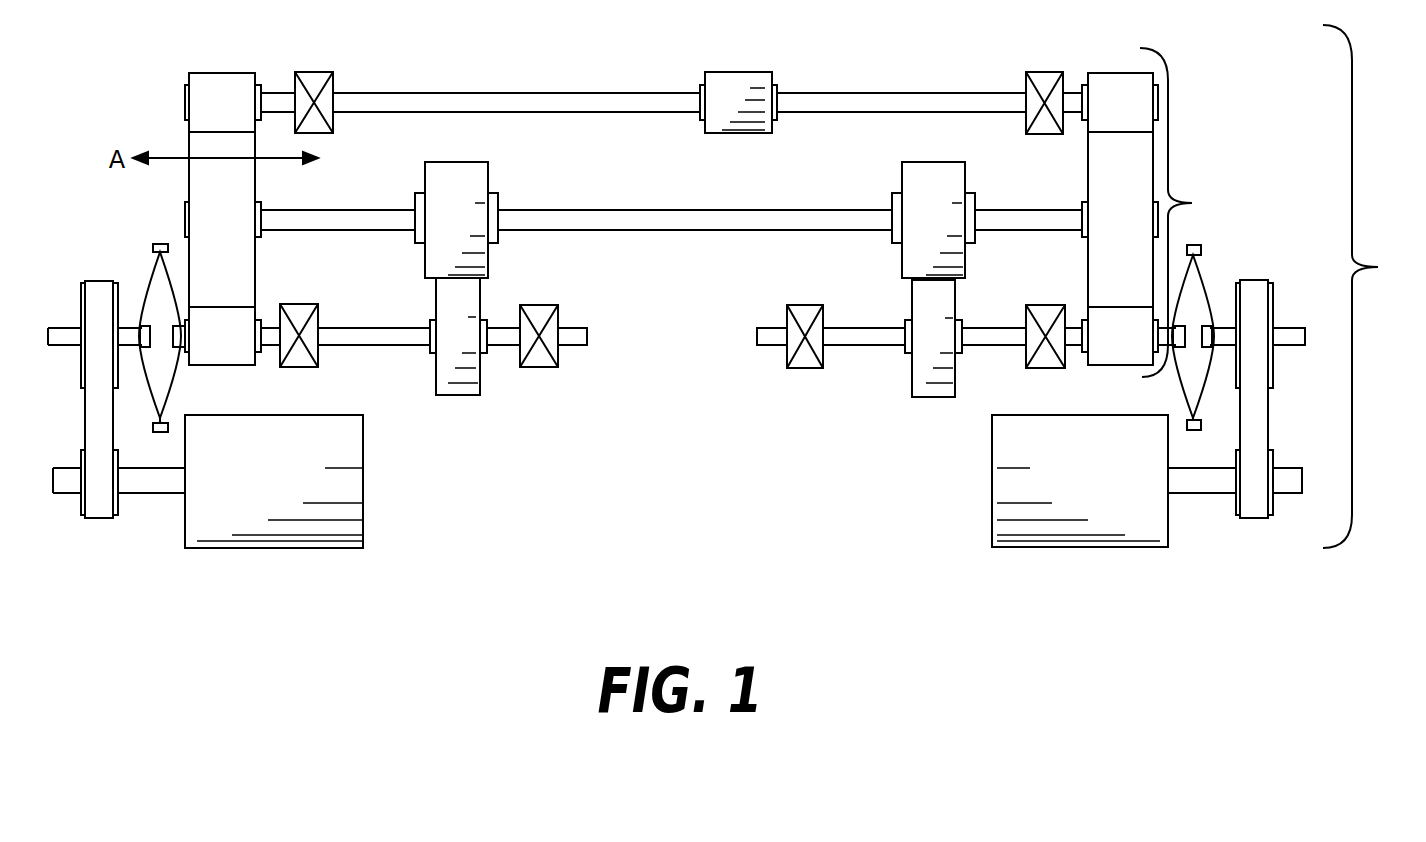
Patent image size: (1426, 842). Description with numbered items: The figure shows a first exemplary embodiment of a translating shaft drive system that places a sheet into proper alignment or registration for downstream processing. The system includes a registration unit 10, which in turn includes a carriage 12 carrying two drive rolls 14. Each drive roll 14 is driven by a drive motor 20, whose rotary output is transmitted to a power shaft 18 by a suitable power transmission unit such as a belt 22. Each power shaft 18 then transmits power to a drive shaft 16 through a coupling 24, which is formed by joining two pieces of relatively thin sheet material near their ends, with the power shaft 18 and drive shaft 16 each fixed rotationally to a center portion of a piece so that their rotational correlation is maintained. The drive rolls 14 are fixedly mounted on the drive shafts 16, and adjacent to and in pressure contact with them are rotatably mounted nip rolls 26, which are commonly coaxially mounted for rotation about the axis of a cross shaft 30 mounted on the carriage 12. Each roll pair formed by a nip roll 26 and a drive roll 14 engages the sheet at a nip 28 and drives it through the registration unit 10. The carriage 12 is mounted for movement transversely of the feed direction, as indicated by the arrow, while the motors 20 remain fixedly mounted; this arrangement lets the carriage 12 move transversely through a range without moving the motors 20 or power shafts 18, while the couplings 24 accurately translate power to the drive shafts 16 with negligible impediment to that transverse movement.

The registration unit 10 is at (1367, 286).
The carriage 12 is at (1185, 212).
The drive roll 14 is at (480, 385).
The drive shaft 16 is at (381, 347).
The power shaft 18 is at (129, 322).
The drive motor 20 is at (275, 548).
The belt 22 is at (100, 518).
The coupling 24 is at (173, 385).
The nip roll 26 is at (456, 160).
The nip 28 is at (467, 280).
The cross shaft 30 is at (701, 208).